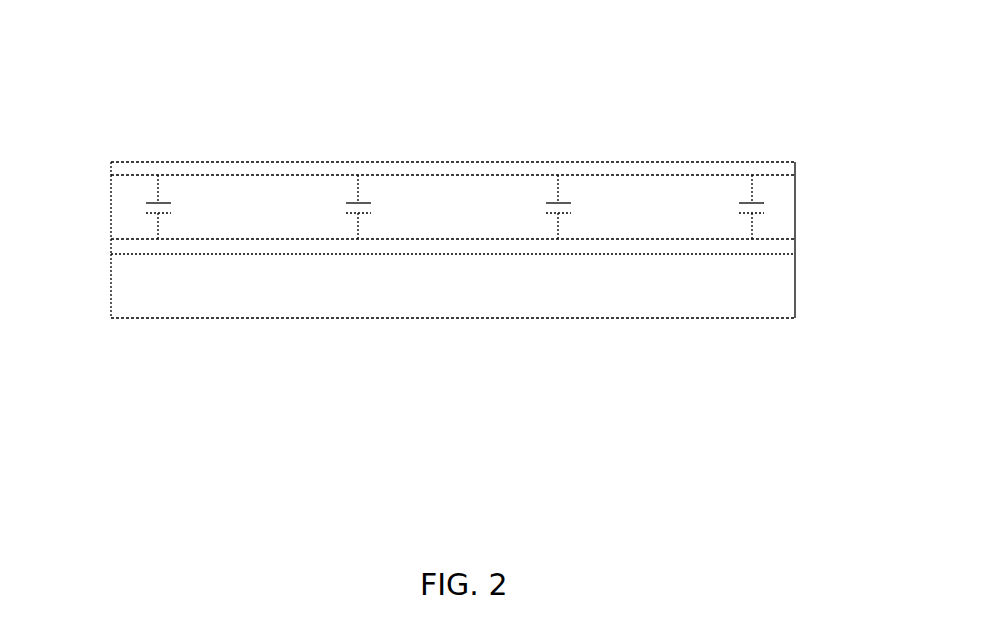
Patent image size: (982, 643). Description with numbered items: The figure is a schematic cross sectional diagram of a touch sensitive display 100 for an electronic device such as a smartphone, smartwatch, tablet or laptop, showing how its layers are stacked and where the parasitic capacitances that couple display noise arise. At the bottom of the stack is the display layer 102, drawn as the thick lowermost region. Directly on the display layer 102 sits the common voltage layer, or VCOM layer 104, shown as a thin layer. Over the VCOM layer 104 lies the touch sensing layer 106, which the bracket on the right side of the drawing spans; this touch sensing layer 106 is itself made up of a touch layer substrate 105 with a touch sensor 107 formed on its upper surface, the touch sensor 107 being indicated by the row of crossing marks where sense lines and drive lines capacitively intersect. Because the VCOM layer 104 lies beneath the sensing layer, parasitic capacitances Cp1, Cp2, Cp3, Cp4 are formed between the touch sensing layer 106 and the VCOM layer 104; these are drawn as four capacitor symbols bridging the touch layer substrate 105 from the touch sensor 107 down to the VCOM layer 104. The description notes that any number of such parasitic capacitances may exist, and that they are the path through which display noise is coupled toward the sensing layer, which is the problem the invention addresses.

The touch sensitive display 100 is at (689, 67).
The display layer 102 is at (110, 283).
The common voltage layer (VCOM) 104 is at (110, 253).
The touch layer substrate 105 is at (109, 211).
The touch sensing layer 106 is at (815, 162).
The touch sensor 107 is at (110, 172).
The parasitic capacitance Cp1 is at (182, 207).
The parasitic capacitance Cp2 is at (336, 207).
The parasitic capacitance Cp3 is at (534, 207).
The parasitic capacitance Cp4 is at (728, 207).